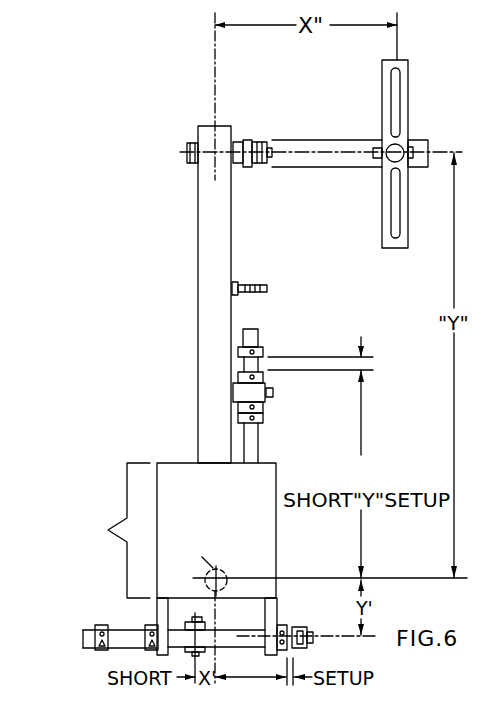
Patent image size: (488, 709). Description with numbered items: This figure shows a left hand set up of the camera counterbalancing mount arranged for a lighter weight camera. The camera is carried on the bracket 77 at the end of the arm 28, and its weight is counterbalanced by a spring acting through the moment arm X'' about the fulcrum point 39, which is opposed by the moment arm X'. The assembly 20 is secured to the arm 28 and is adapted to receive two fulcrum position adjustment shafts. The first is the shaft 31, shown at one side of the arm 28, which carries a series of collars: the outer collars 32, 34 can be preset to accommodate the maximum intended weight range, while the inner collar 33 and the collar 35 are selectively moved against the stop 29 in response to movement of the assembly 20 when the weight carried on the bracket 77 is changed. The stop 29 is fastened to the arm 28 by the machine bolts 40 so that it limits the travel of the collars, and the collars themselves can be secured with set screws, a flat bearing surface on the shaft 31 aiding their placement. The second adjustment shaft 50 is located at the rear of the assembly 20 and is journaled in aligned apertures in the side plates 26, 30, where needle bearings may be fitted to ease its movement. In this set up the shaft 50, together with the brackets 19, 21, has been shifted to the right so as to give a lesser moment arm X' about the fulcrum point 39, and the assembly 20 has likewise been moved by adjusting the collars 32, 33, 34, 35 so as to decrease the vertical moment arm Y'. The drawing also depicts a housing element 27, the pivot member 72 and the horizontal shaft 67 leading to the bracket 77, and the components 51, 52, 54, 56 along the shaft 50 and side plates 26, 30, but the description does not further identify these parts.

The bracket 19 is at (187, 627).
The assembly 20 is at (111, 530).
The bracket 21 is at (205, 648).
The side plate 26 is at (158, 653).
The housing 27 is at (231, 514).
The arm 28 is at (198, 202).
The stop 29 is at (243, 391).
The side plate 30 is at (265, 610).
The fulcrum position adjustment shaft 31 is at (251, 328).
The outer collar 32 is at (263, 345).
The inner collar 33 is at (265, 408).
The outer collar 34 is at (265, 418).
The collar 35 is at (263, 371).
The fulcrum point 39 is at (221, 570).
The machine bolt 40 is at (273, 394).
The second adjustment shaft 50 is at (83, 638).
The lock nut 51 is at (301, 627).
The bearing block 52 is at (279, 625).
The support block 54 is at (148, 625).
The support block 56 is at (98, 625).
The horizontal shaft 67 is at (290, 168).
The pivot pin 72 is at (387, 147).
The bracket 77 is at (382, 70).